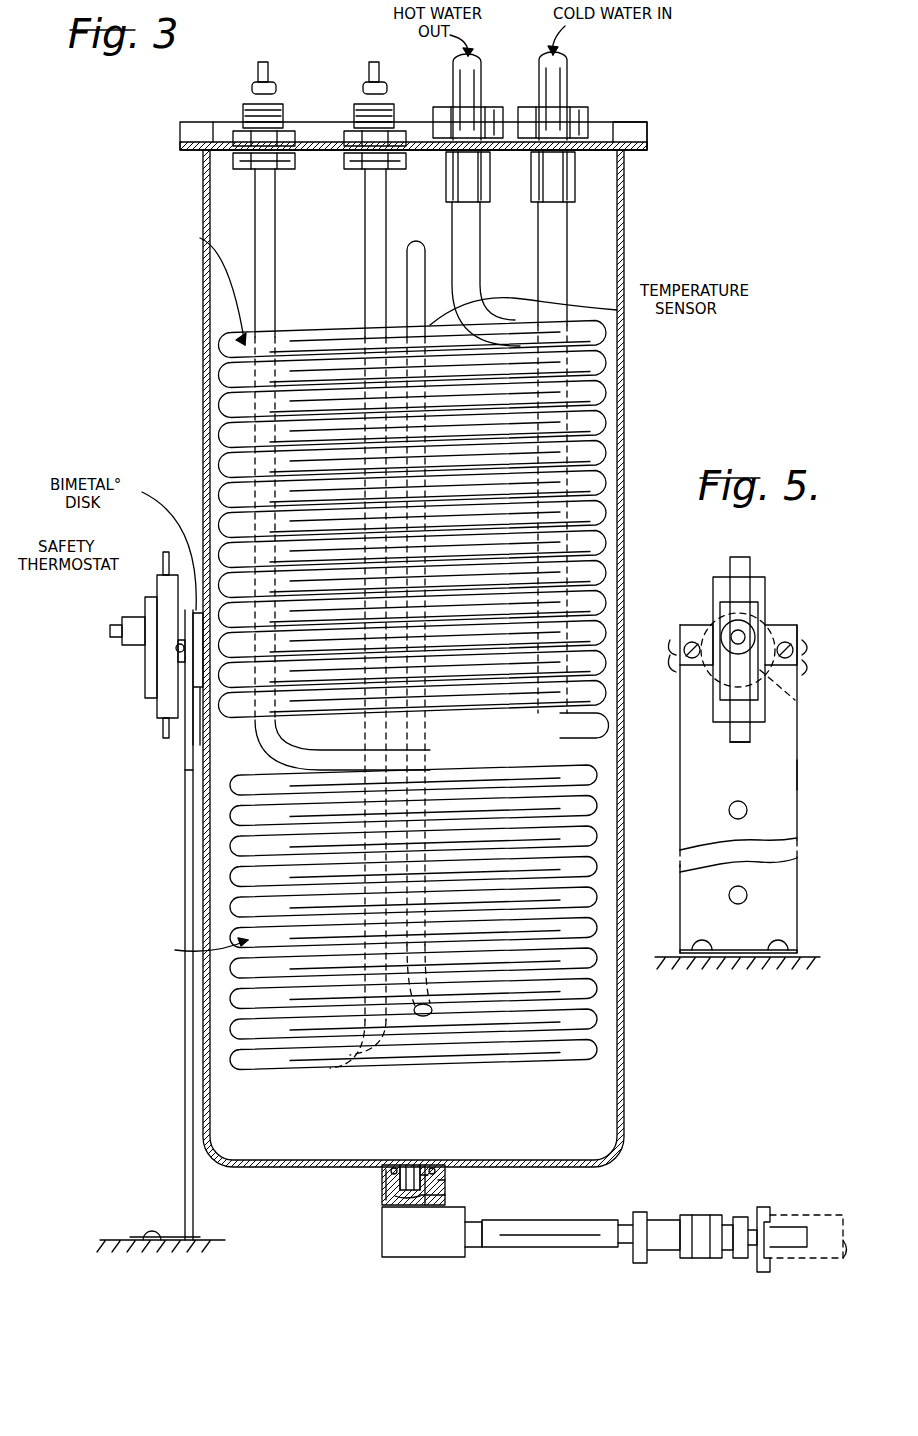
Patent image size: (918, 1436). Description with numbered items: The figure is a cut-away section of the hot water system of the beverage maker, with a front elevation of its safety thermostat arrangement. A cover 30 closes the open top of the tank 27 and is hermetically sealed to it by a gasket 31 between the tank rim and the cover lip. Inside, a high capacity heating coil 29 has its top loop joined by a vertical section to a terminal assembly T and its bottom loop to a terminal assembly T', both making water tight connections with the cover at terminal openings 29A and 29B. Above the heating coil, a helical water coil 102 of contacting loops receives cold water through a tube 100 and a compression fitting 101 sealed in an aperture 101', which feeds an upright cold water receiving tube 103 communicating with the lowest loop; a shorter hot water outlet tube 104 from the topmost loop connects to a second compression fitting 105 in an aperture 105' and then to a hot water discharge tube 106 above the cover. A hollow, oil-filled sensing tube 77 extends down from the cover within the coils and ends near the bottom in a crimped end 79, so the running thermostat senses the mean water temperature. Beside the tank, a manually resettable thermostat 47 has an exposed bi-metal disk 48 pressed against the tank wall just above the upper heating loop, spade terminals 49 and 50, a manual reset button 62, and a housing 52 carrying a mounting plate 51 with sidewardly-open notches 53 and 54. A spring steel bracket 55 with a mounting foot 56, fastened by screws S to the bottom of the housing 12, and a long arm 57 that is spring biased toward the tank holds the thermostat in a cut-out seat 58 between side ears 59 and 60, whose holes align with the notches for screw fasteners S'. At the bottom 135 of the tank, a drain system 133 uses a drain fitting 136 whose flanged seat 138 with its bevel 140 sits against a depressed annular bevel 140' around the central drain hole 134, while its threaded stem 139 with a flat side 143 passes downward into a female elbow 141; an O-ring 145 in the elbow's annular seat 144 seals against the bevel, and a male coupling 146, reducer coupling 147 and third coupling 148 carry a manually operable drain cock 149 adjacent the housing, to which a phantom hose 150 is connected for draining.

In FIG. 3, the housing 12 is at (218, 1238).
In FIG. 5, the housing 12 is at (820, 957).
In FIG. 3, the tank 27 is at (205, 295).
In FIG. 3, the heating coil 29 is at (228, 968).
In FIG. 3, the terminal opening 29A is at (258, 170).
In FIG. 3, the terminal opening 29B is at (372, 170).
In FIG. 3, the cover 30 is at (308, 140).
In FIG. 3, the gasket 31 is at (652, 132).
In FIG. 3, the manually resettable thermostat 47 is at (135, 604).
In FIG. 5, the manually resettable thermostat 47 is at (790, 582).
In FIG. 3, the bi-metal disk 48 is at (196, 610).
In FIG. 3, the terminal 49 is at (163, 562).
In FIG. 5, the terminal 49 is at (740, 562).
In FIG. 3, the terminal 50 is at (163, 734).
In FIG. 5, the terminal 50 is at (740, 745).
In FIG. 3, the mounting plate 51 is at (203, 712).
In FIG. 5, the mounting plate 51 is at (800, 712).
In FIG. 3, the housing 52 is at (166, 702).
In FIG. 5, the notch 53 is at (676, 668).
In FIG. 3, the notch 54 is at (182, 660).
In FIG. 5, the notch 54 is at (810, 655).
In FIG. 3, the bracket 55 is at (186, 796).
In FIG. 5, the bracket 55 is at (800, 814).
In FIG. 3, the mounting foot 56 is at (142, 1236).
In FIG. 5, the mounting foot 56 is at (745, 950).
In FIG. 3, the long arm 57 is at (185, 856).
In FIG. 5, the long arm 57 is at (690, 802).
In FIG. 5, the seat 58 is at (710, 668).
In FIG. 5, the side ear 59 is at (686, 624).
In FIG. 5, the side ear 60 is at (798, 625).
In FIG. 3, the manual reset button 62 is at (110, 633).
In FIG. 5, the manual reset button 62 is at (746, 640).
In FIG. 3, the sensing tube 77 is at (432, 250).
In FIG. 3, the crimped end 79 is at (428, 1014).
In FIG. 3, the tube 100 is at (562, 76).
In FIG. 3, the compression fitting 101 is at (580, 106).
In FIG. 3, the aperture 101' is at (536, 186).
In FIG. 3, the water coil 102 is at (225, 401).
In FIG. 3, the cold water receiving tube 103 is at (567, 262).
In FIG. 3, the hot water outlet tube 104 is at (478, 278).
In FIG. 3, the second compression fitting 105 is at (458, 89).
In FIG. 3, the aperture 105' is at (445, 177).
In FIG. 3, the hot water discharge tube 106 is at (478, 72).
In FIG. 3, the drain system 133 is at (372, 1223).
In FIG. 3, the drain hole 134 is at (440, 1173).
In FIG. 3, the bottom 135 is at (522, 1163).
In FIG. 3, the drain fitting 136 is at (412, 1163).
In FIG. 3, the flanged seat 138 is at (440, 1163).
In FIG. 3, the threaded stem 139 is at (445, 1192).
In FIG. 3, the bevel 140 is at (390, 1148).
In FIG. 3, the annular bevel 140' is at (378, 1151).
In FIG. 3, the female elbow 141 is at (438, 1244).
In FIG. 3, the flat side 143 is at (410, 1197).
In FIG. 3, the annular seat 144 is at (448, 1180).
In FIG. 3, the O-ring 145 is at (386, 1183).
In FIG. 3, the male coupling 146 is at (547, 1222).
In FIG. 3, the reducer coupling 147 is at (660, 1216).
In FIG. 3, the third coupling 148 is at (735, 1218).
In FIG. 3, the drain cock 149 is at (763, 1206).
In FIG. 3, the hose 150 is at (812, 1215).
In FIG. 3, the terminal assembly T is at (331, 395).
In FIG. 3, the terminal assembly T' is at (368, 543).
In FIG. 3, the screw S is at (152, 1209).
In FIG. 5, the screw S is at (736, 926).
In FIG. 3, the screw fastener S' is at (146, 660).
In FIG. 5, the screw fastener S' is at (736, 659).